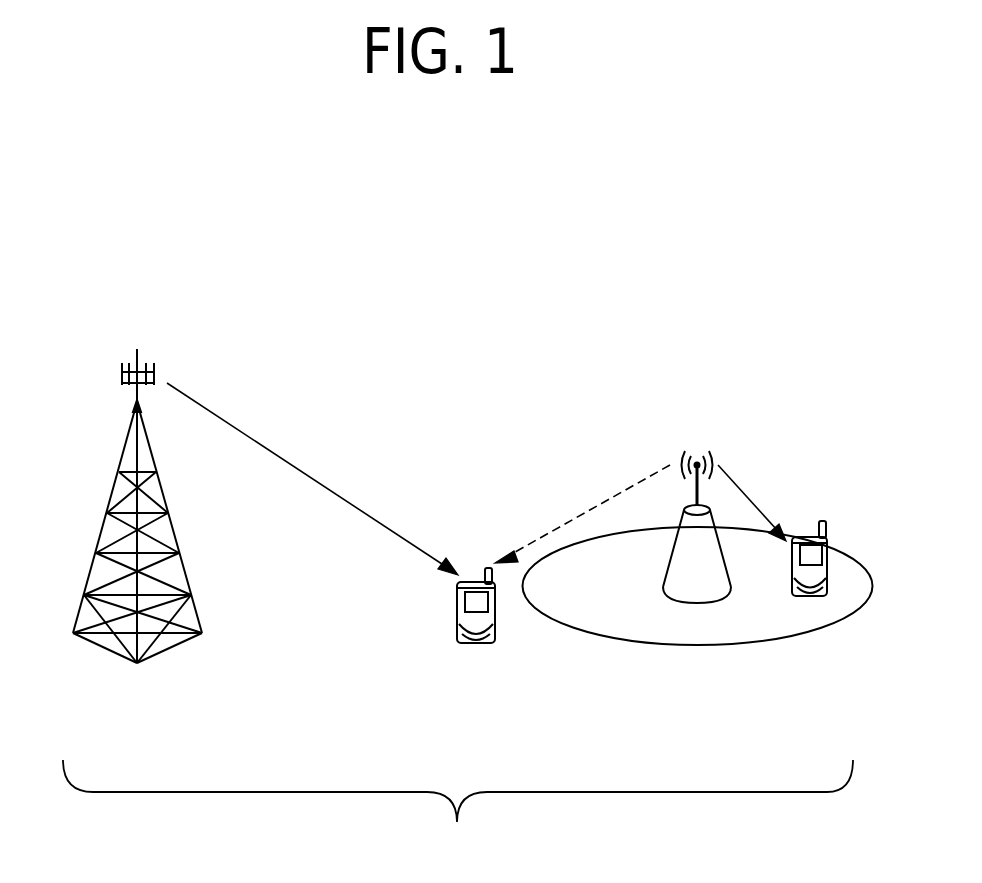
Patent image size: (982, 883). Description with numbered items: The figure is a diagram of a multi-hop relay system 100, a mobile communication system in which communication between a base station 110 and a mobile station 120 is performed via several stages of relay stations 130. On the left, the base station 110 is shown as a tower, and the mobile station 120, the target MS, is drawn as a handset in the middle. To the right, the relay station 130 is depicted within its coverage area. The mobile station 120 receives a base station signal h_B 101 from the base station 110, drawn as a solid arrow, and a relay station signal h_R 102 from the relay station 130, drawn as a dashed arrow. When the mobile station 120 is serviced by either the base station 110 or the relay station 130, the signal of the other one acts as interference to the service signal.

The multi-hop relay system 100 is at (458, 813).
The base station signal h_B 101 is at (313, 432).
The relay station signal h_R 102 is at (587, 470).
The base station 110 is at (165, 688).
The mobile station 120 is at (558, 673).
The relay station 130 is at (720, 622).